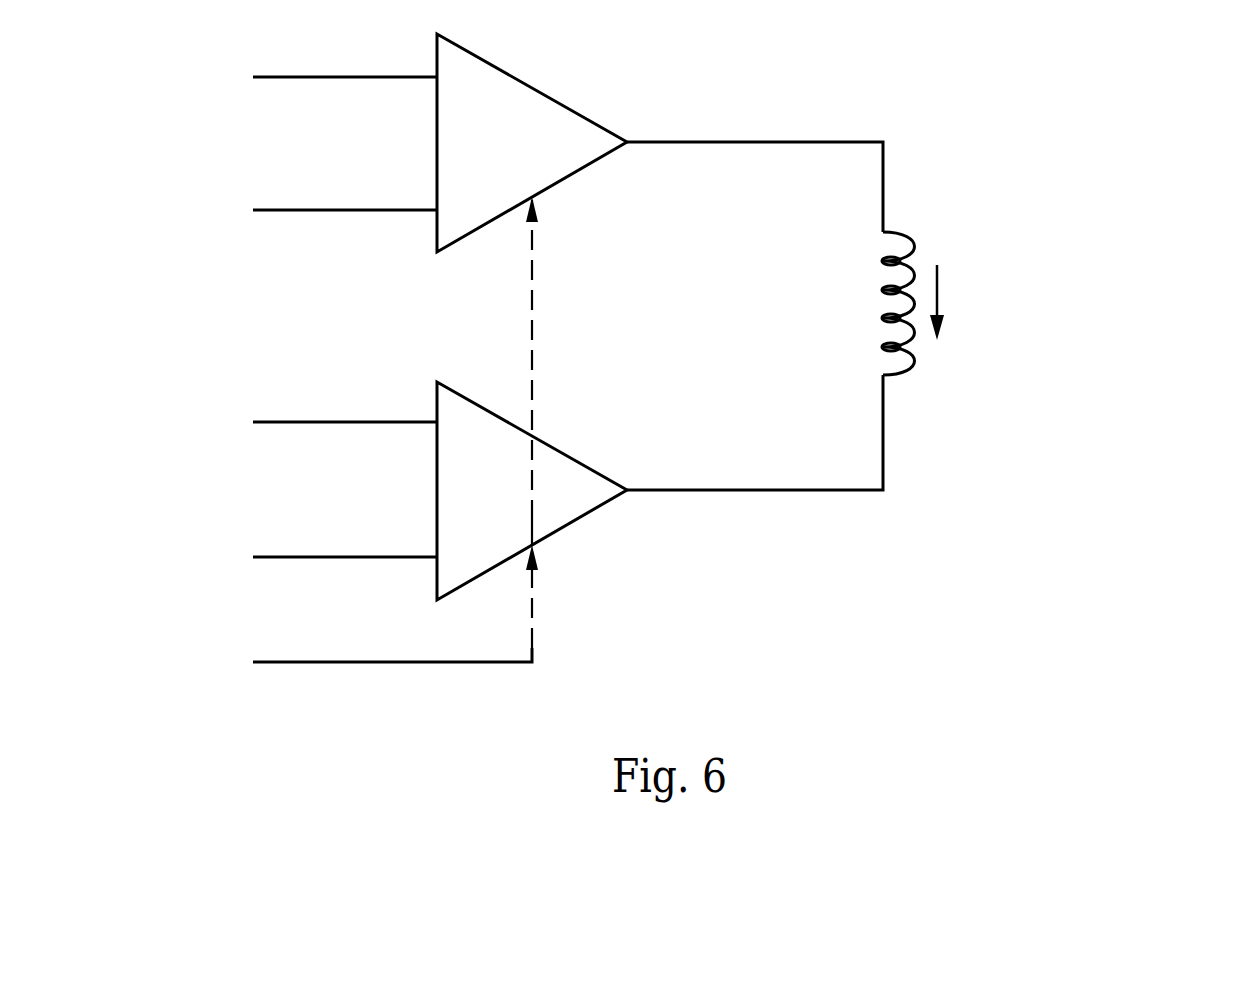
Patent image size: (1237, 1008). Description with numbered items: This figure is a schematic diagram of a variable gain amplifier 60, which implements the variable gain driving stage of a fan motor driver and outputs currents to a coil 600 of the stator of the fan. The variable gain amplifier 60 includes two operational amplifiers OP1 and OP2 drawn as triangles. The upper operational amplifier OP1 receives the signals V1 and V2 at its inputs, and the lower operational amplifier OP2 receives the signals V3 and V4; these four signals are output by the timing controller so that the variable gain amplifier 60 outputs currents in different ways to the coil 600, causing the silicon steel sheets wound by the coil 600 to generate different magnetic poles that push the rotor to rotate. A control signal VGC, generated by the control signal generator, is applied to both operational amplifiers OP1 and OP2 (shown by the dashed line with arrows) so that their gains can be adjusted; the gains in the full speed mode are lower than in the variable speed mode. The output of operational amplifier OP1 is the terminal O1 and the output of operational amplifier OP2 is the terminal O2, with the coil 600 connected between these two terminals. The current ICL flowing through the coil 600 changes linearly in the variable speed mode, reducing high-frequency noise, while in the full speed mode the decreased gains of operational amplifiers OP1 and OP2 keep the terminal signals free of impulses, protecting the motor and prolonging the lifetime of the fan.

The variable gain amplifier 60 is at (702, 355).
The coil 600 is at (905, 243).
The operational amplifier OP1 is at (532, 143).
The operational amplifier OP2 is at (532, 491).
The signal V1 is at (310, 76).
The signal V2 is at (310, 210).
The signal V3 is at (310, 422).
The signal V4 is at (310, 557).
The control signal VGC is at (355, 662).
The terminal O1 is at (794, 178).
The terminal O2 is at (794, 447).
The current ICL is at (959, 312).